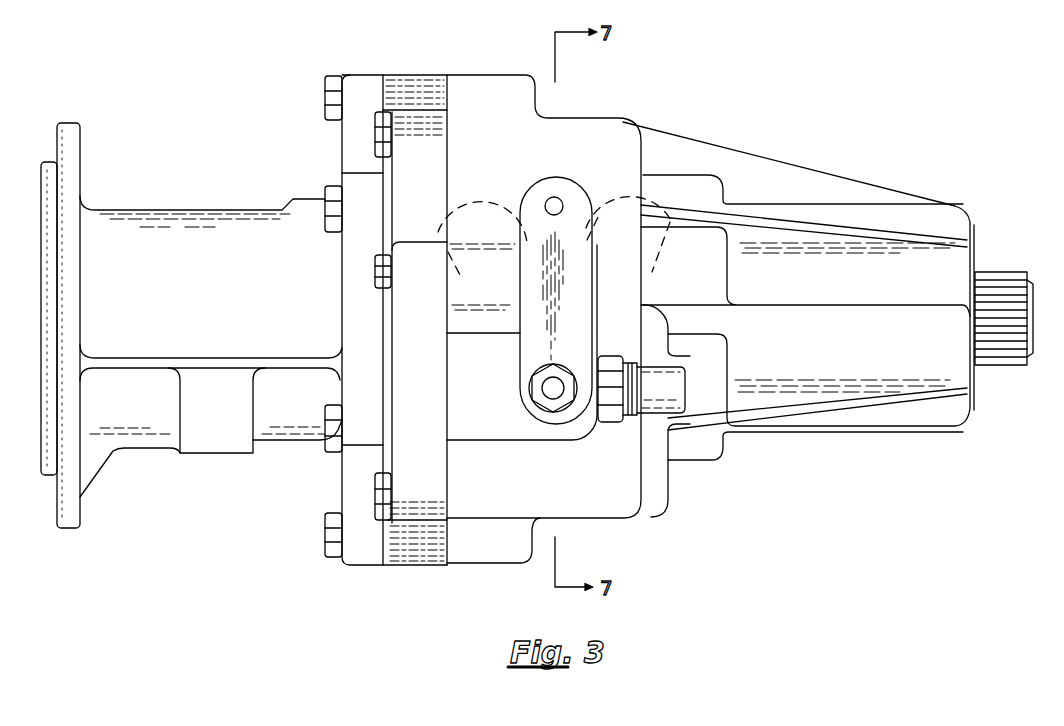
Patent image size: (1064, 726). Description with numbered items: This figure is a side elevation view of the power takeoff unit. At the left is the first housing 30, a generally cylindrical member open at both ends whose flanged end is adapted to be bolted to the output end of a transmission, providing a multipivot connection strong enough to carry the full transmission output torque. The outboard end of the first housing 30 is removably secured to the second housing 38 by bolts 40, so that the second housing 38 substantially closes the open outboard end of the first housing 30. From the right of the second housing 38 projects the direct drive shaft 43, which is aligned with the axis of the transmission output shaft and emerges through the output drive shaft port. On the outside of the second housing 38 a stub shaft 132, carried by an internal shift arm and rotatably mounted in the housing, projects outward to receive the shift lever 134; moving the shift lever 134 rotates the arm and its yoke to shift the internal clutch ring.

The first housing 30 is at (176, 208).
The second housing 38 is at (672, 175).
The bolts 40 is at (325, 93).
The direct drive shaft 43 is at (1012, 272).
The stub shaft 132 is at (546, 386).
The shift lever 134 is at (567, 178).